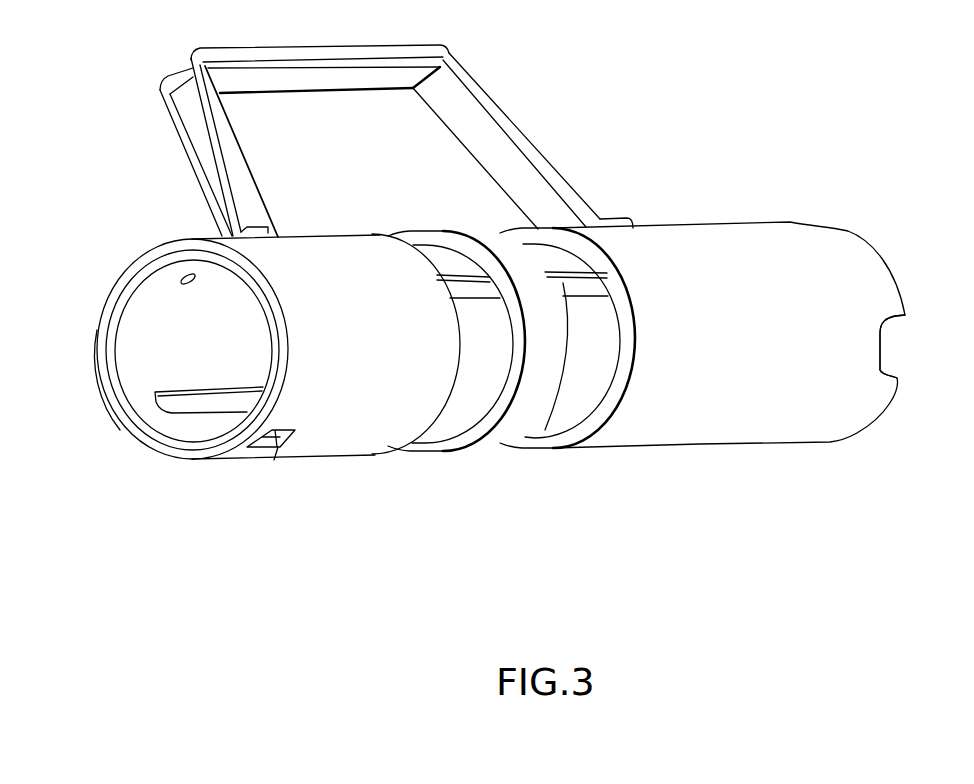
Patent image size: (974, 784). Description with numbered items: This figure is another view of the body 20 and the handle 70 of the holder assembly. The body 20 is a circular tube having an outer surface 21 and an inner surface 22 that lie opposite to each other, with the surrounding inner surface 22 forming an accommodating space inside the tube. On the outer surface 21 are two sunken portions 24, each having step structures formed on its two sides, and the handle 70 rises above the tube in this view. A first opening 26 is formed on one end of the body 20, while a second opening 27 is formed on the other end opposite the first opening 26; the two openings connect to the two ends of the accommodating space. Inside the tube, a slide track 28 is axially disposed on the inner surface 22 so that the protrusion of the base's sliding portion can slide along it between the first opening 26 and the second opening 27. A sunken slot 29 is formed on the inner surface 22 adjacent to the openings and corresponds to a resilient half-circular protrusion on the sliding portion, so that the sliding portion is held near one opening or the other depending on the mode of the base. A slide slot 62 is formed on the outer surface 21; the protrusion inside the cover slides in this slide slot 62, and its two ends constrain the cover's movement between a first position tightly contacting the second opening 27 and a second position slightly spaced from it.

The body 20 is at (767, 342).
The outer surface 21 is at (343, 410).
The inner surface 22 is at (193, 340).
The sunken portions 24 is at (465, 390).
The first opening 26 is at (901, 287).
The second opening 27 is at (143, 420).
The slide track 28 is at (207, 400).
The sunken slot 29 is at (180, 278).
The slide slot 62 is at (275, 447).
The handle 70 is at (530, 184).